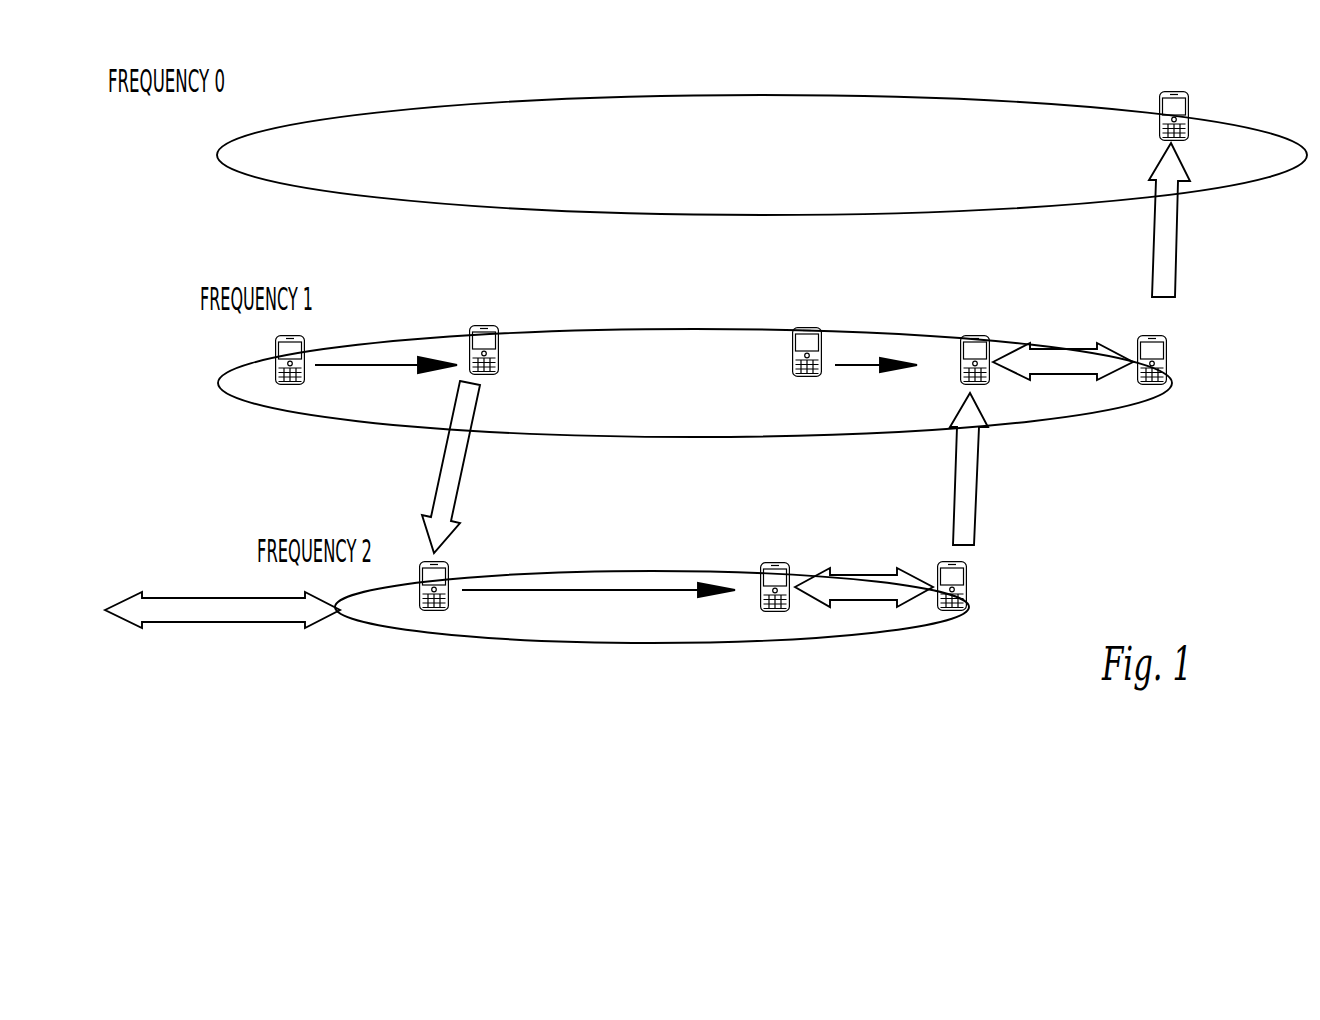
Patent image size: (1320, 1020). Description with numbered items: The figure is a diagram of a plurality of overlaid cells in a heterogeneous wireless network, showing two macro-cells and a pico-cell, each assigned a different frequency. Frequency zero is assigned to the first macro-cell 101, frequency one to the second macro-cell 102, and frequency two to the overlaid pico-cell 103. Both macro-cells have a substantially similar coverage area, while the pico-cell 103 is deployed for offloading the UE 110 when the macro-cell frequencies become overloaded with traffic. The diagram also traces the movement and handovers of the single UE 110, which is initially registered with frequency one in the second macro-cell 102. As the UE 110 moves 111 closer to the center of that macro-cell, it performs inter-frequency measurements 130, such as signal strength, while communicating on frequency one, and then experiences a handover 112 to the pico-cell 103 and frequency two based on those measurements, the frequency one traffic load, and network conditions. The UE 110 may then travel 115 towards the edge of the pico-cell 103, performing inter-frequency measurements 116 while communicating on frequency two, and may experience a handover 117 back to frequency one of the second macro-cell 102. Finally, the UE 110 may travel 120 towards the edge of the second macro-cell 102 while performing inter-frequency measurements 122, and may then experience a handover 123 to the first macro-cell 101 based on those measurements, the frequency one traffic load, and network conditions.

The first macro-cell 101 is at (763, 93).
The second macro-cell 102 is at (654, 328).
The pico-cell 103 is at (730, 643).
The UE 110 is at (275, 352).
The movement 111 is at (395, 363).
The handover 112 is at (445, 463).
The travel 115 is at (607, 590).
The inter-frequency measurements 116 is at (863, 590).
The handover 117 is at (976, 490).
The travel 120 is at (858, 365).
The inter-frequency measurements 122 is at (1057, 362).
The handover 123 is at (1174, 240).
The inter-frequency measurements 130 is at (226, 623).